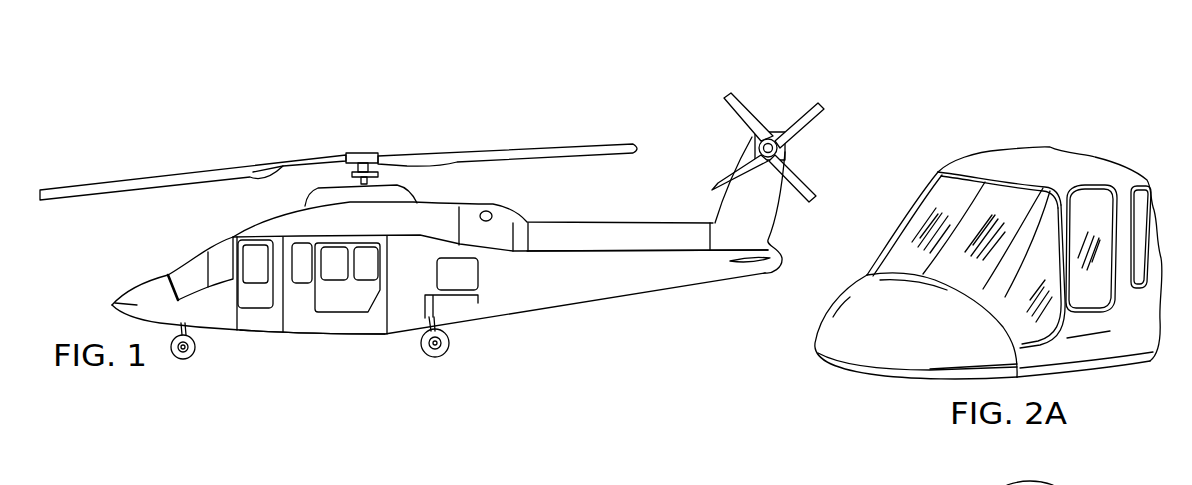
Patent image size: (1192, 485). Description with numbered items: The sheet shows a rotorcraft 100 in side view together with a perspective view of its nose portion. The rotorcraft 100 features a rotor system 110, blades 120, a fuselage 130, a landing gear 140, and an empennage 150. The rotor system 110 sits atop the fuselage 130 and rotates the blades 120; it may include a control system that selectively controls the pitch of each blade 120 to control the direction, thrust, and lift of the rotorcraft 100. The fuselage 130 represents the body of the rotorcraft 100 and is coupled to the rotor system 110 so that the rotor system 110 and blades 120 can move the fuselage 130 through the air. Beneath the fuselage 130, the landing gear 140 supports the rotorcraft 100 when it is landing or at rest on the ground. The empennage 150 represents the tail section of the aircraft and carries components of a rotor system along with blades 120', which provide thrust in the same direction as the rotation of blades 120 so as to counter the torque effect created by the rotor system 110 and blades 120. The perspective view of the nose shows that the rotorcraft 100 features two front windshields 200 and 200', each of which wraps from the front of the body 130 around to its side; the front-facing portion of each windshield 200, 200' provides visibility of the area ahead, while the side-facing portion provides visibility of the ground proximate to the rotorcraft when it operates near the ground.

In FIG. 1, the rotorcraft 100 is at (229, 139).
In FIG. 1, the rotor system 110 is at (363, 152).
In FIG. 1, the blades 120 is at (338, 148).
In FIG. 1, the blades 120' is at (794, 147).
In FIG. 1, the fuselage 130 is at (307, 334).
In FIG. 2A, the fuselage 130 is at (890, 382).
In FIG. 1, the landing gear 140 is at (183, 360).
In FIG. 1, the empennage 150 is at (592, 297).
In FIG. 2A, the front windshield 200 is at (964, 194).
In FIG. 2A, the front windshield 200' is at (1015, 224).